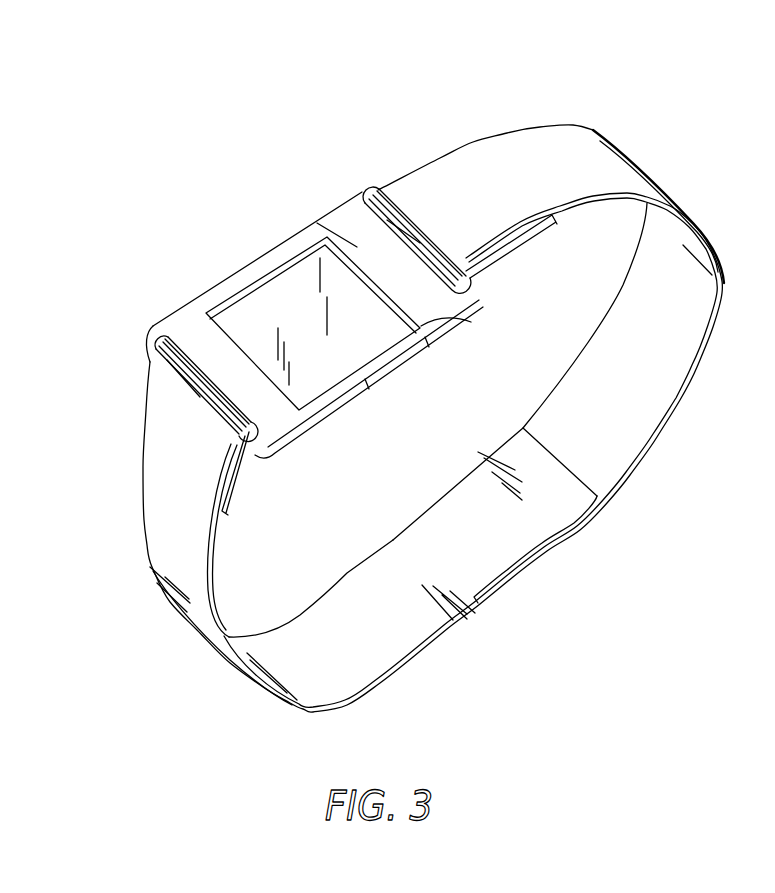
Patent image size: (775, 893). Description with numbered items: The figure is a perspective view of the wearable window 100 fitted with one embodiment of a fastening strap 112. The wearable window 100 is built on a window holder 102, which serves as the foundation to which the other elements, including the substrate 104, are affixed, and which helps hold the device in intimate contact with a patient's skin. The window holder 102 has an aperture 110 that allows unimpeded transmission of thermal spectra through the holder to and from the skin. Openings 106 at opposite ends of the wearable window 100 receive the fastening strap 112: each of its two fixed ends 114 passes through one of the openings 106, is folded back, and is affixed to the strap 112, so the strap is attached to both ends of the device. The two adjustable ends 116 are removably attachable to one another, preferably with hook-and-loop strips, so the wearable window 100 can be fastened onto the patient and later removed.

The wearable window 100 is at (321, 108).
The window holder 102 is at (208, 298).
The substrate 104 is at (300, 276).
The openings 106 is at (374, 198).
The aperture 110 is at (437, 317).
The fastening strap 112 is at (553, 142).
The fixed ends 114 is at (510, 252).
The adjustable ends 116 is at (452, 523).